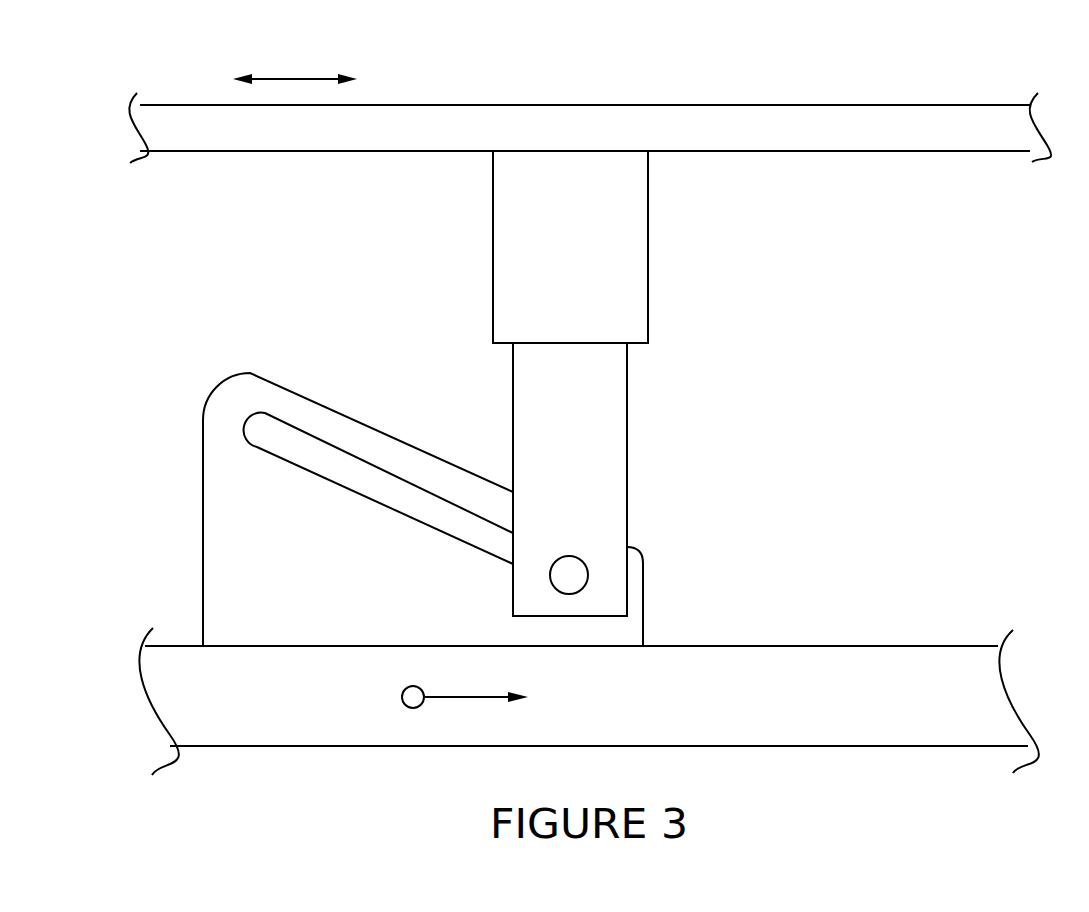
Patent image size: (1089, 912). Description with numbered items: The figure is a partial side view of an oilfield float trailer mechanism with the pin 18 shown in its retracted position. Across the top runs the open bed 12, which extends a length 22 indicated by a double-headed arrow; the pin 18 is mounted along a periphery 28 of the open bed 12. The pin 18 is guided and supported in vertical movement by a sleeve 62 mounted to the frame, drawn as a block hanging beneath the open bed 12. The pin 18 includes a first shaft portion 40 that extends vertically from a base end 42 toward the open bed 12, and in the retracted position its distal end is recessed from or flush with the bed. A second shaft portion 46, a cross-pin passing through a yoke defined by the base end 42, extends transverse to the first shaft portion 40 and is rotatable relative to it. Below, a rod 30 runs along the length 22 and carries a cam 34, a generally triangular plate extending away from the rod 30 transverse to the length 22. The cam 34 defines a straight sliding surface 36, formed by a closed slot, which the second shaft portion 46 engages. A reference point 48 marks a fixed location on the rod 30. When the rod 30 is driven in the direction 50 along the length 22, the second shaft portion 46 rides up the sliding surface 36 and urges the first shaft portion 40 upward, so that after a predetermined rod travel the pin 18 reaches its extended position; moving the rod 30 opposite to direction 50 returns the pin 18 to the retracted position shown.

The open bed 12 is at (748, 104).
The periphery 28 is at (925, 124).
The length 22 is at (315, 79).
The sleeve 62 is at (568, 267).
The pin 18 is at (669, 477).
The first shaft portion 40 is at (610, 409).
The base end 42 is at (610, 565).
The second shaft portion 46 is at (572, 578).
The cam 34 is at (252, 577).
The sliding surface 36 is at (317, 472).
The rod 30 is at (885, 687).
The reference point 48 is at (410, 710).
The direction 50 is at (480, 698).